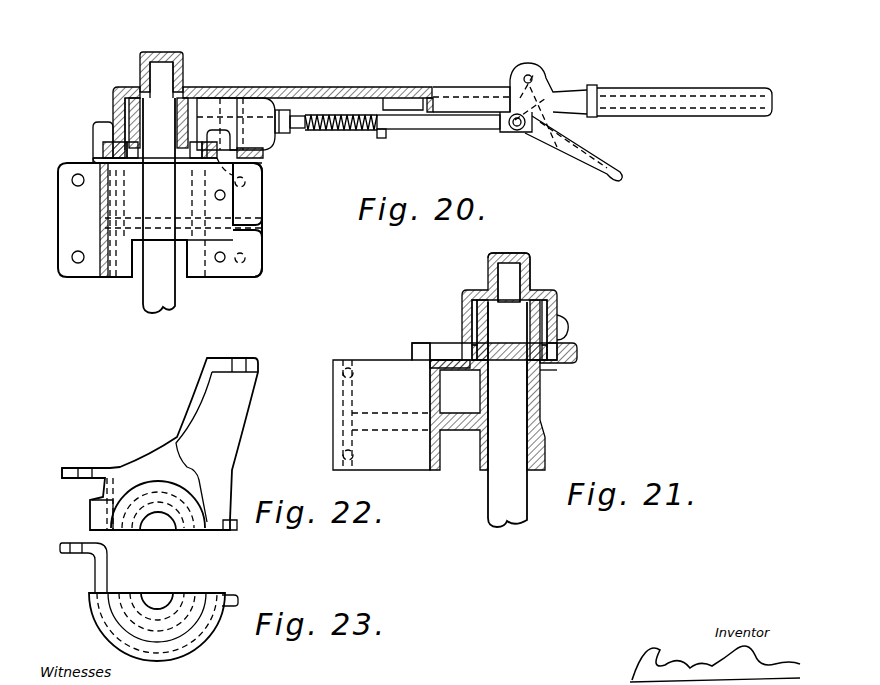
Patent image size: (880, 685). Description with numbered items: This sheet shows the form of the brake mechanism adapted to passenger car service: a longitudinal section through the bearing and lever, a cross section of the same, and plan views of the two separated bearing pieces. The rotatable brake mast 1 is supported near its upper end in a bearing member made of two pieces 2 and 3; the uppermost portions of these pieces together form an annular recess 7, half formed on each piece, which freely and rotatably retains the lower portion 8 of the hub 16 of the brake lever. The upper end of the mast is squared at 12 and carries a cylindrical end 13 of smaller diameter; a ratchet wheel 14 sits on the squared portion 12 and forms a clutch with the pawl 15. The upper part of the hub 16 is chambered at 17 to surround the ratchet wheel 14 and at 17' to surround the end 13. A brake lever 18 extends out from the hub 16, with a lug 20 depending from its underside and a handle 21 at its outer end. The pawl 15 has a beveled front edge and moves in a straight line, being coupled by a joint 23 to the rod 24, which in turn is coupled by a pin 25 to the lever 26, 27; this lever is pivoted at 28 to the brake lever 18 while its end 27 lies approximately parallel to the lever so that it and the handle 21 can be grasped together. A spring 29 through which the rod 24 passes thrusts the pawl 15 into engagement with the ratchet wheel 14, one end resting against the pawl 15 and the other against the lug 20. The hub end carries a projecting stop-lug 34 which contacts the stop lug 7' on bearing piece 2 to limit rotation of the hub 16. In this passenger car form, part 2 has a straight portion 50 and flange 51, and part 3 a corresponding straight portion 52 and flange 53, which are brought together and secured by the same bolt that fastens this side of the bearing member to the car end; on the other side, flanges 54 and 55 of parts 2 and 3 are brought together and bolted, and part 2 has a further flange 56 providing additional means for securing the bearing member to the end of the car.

In FIG. 20, the brake mast 1 is at (159, 205).
In FIG. 21, the brake mast 1 is at (507, 414).
In FIG. 20, the bearing piece 2 is at (248, 198).
In FIG. 21, the bearing piece 2 is at (380, 390).
In FIG. 22, the bearing piece 2 is at (160, 444).
In FIG. 20, the bearing piece 3 is at (75, 200).
In FIG. 21, the bearing piece 3 is at (548, 380).
In FIG. 23, the bearing piece 3 is at (185, 642).
In FIG. 22, the annular recess 7 is at (179, 494).
In FIG. 23, the annular recess 7 is at (161, 628).
In FIG. 20, the stop lug 7' is at (98, 129).
In FIG. 22, the stop lug 7' is at (87, 515).
In FIG. 20, the lower portion of the hub 8 is at (108, 148).
In FIG. 21, the lower portion of the hub 8 is at (574, 358).
In FIG. 20, the squared upper end of the brake mast 12 is at (114, 100).
In FIG. 21, the squared upper end of the brake mast 12 is at (474, 306).
In FIG. 20, the cylindrical end 13 is at (158, 70).
In FIG. 21, the cylindrical end 13 is at (509, 270).
In FIG. 20, the ratchet wheel 14 is at (190, 100).
In FIG. 21, the ratchet wheel 14 is at (470, 334).
In FIG. 20, the pawl 15 is at (252, 110).
In FIG. 20, the hub 16 is at (268, 101).
In FIG. 21, the hub 16 is at (478, 292).
In FIG. 20, the chamber 17 is at (161, 152).
In FIG. 21, the chamber 17 is at (573, 339).
In FIG. 20, the chamber portion 17' is at (181, 68).
In FIG. 21, the chamber portion 17' is at (528, 271).
In FIG. 20, the brake lever 18 is at (432, 87).
In FIG. 20, the lug 20 is at (380, 138).
In FIG. 20, the handle 21 is at (715, 92).
In FIG. 20, the joint 23 is at (292, 112).
In FIG. 20, the rod 24 is at (448, 129).
In FIG. 20, the pin 25 is at (516, 130).
In FIG. 20, the lever 26 is at (546, 98).
In FIG. 20, the lever end 27 is at (605, 170).
In FIG. 20, the pivot 28 is at (532, 79).
In FIG. 20, the spring 29 is at (345, 113).
In FIG. 21, the stop-lug 34 is at (566, 318).
In FIG. 20, the straight portion 50 is at (112, 278).
In FIG. 22, the straight portion 50 is at (108, 492).
In FIG. 22, the flange 51 is at (70, 466).
In FIG. 20, the straight portion 52 is at (101, 276).
In FIG. 23, the straight portion 52 is at (107, 568).
In FIG. 20, the flange 53 is at (72, 226).
In FIG. 23, the flange 53 is at (62, 548).
In FIG. 20, the flange 54 is at (206, 258).
In FIG. 22, the flange 54 is at (236, 531).
In FIG. 23, the flange 55 is at (238, 598).
In FIG. 20, the flange 56 is at (250, 244).
In FIG. 21, the flange 56 is at (334, 392).
In FIG. 22, the flange 56 is at (248, 362).